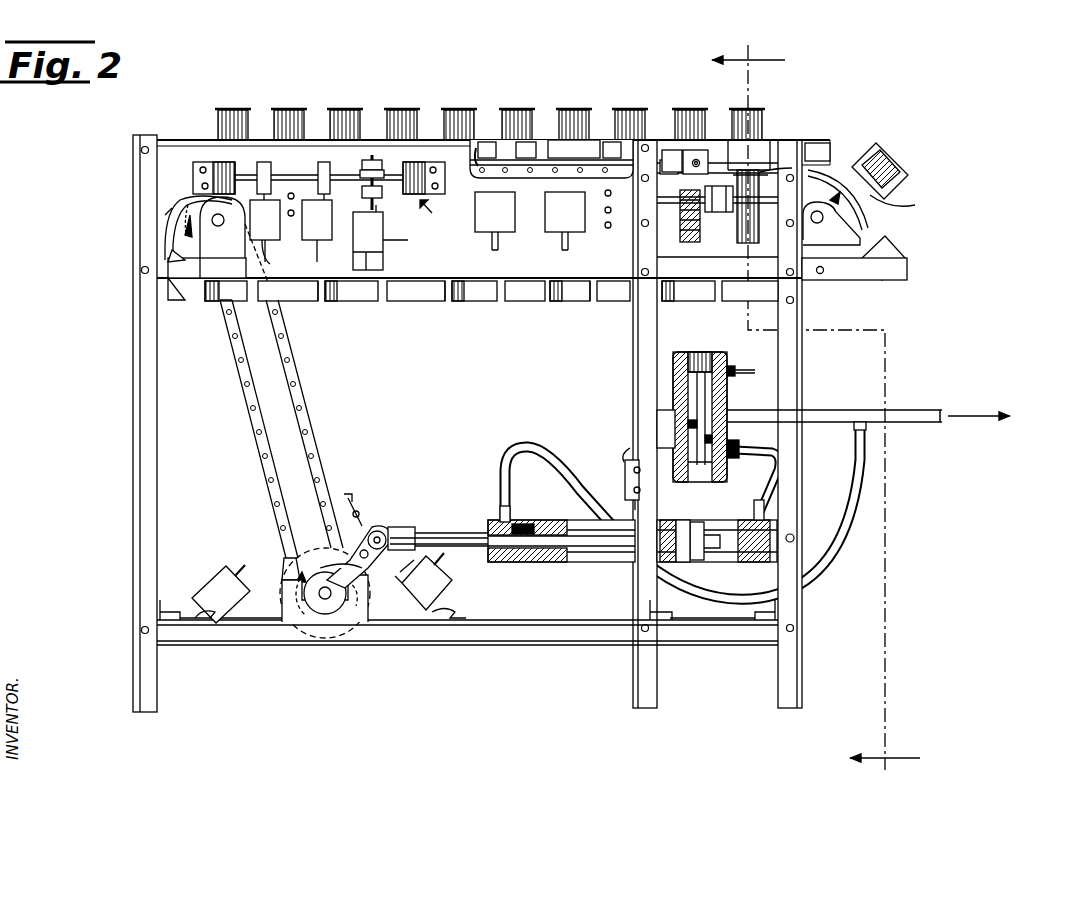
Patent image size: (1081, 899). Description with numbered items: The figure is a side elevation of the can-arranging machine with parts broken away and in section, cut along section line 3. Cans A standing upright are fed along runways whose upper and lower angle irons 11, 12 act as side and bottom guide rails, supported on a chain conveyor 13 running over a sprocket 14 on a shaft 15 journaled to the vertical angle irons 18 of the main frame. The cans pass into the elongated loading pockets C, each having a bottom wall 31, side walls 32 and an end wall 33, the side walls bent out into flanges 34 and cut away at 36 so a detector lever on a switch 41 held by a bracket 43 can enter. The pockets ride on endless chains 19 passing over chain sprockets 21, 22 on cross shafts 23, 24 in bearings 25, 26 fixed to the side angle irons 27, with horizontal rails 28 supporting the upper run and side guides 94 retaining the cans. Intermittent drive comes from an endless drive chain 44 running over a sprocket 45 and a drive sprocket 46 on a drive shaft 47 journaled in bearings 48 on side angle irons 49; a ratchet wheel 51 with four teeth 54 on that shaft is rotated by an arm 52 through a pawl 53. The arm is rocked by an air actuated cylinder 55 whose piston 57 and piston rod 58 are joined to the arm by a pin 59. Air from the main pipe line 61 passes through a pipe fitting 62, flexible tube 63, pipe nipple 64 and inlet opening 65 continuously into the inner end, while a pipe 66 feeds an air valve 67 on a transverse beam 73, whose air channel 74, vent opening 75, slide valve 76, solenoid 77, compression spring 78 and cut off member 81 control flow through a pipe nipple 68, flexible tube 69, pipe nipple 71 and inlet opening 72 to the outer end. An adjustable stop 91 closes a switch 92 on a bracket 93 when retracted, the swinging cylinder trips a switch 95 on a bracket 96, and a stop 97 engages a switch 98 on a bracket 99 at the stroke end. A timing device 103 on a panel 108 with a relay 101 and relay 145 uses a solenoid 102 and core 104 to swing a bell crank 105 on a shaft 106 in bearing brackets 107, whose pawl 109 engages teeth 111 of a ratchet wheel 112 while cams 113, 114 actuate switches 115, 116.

The section line 3- 3 is at (831, 411).
The upper angle iron 11 is at (745, 140).
The lower angle iron 12 is at (742, 142).
The chain conveyor 13 is at (737, 240).
The sprocket 14 is at (695, 206).
The shaft 15 is at (662, 210).
The vertical angle iron 18 is at (150, 392).
The endless chain 19 is at (170, 208).
The chain sprocket 21 is at (890, 242).
The chain sprocket 22 is at (207, 268).
The cross shaft 23 is at (818, 226).
The cross shaft 24 is at (219, 228).
The bearing 25 is at (842, 252).
The bearing 26 is at (220, 268).
The side angle iron 27 is at (185, 282).
The horizontal rail 28 is at (475, 180).
The bottom wall 31 is at (886, 168).
The side wall 32 is at (422, 282).
The end wall 33 is at (395, 303).
The flange 34 is at (225, 305).
The cut away 36 is at (905, 200).
The electric switch 41 is at (705, 153).
The bracket 43 is at (672, 155).
The endless drive chain 44 is at (230, 325).
The sprocket 45 is at (192, 202).
The drive sprocket 46 is at (290, 626).
The drive shaft 47 is at (328, 590).
The bearing 48 is at (348, 618).
The side angle iron 49 is at (500, 626).
The ratchet wheel 51 is at (350, 590).
The arm 52 is at (368, 528).
The pawl 53 is at (368, 558).
The tooth 54 is at (325, 552).
The air actuated cylinder 55 is at (596, 562).
The piston 57 is at (692, 562).
The piston rod 58 is at (448, 533).
The pin 59 is at (380, 536).
The main pipe line 61 is at (900, 410).
The pipe fitting 62 is at (862, 410).
The flexible tube 63 is at (532, 450).
The pipe nipple 64 is at (498, 508).
The inlet opening 65 is at (522, 524).
The pipe 66 is at (814, 410).
The air valve 67 is at (735, 402).
The pipe nipple 68 is at (735, 460).
The flexible tube 69 is at (758, 476).
The pipe nipple 71 is at (752, 505).
The inlet opening 72 is at (726, 522).
The transverse beam 73 is at (657, 428).
The air channel 74 is at (686, 450).
The vent opening 75 is at (690, 462).
The slide valve 76 is at (690, 405).
The electric solenoid 77 is at (688, 352).
The compression spring 78 is at (705, 355).
The cut off member 81 is at (690, 520).
The adjustable stop 91 is at (410, 565).
The switch 92 is at (445, 568).
The bracket 93 is at (420, 606).
The side guide 94 is at (478, 148).
The electric switch 95 is at (624, 468).
The bracket 96 is at (625, 488).
The adjustable stop 97 is at (354, 508).
The electric switch 98 is at (225, 582).
The bracket 99 is at (236, 600).
The relay 101 is at (495, 221).
The solenoid 102 is at (353, 258).
The timing device 103 is at (426, 217).
The movable core 104 is at (320, 234).
The bell crank 105 is at (378, 208).
The shaft 106 is at (287, 174).
The bearing bracket 107 is at (218, 168).
The panel 108 is at (172, 146).
The pawl 109 is at (372, 160).
The tooth 111 is at (360, 172).
The ratchet wheel 112 is at (362, 190).
The cam 113 is at (263, 164).
The cam 114 is at (324, 164).
The switch 115 is at (282, 252).
The switch 116 is at (272, 228).
The relay 145 is at (565, 221).
The can A is at (334, 112).
The loading pocket C is at (517, 222).